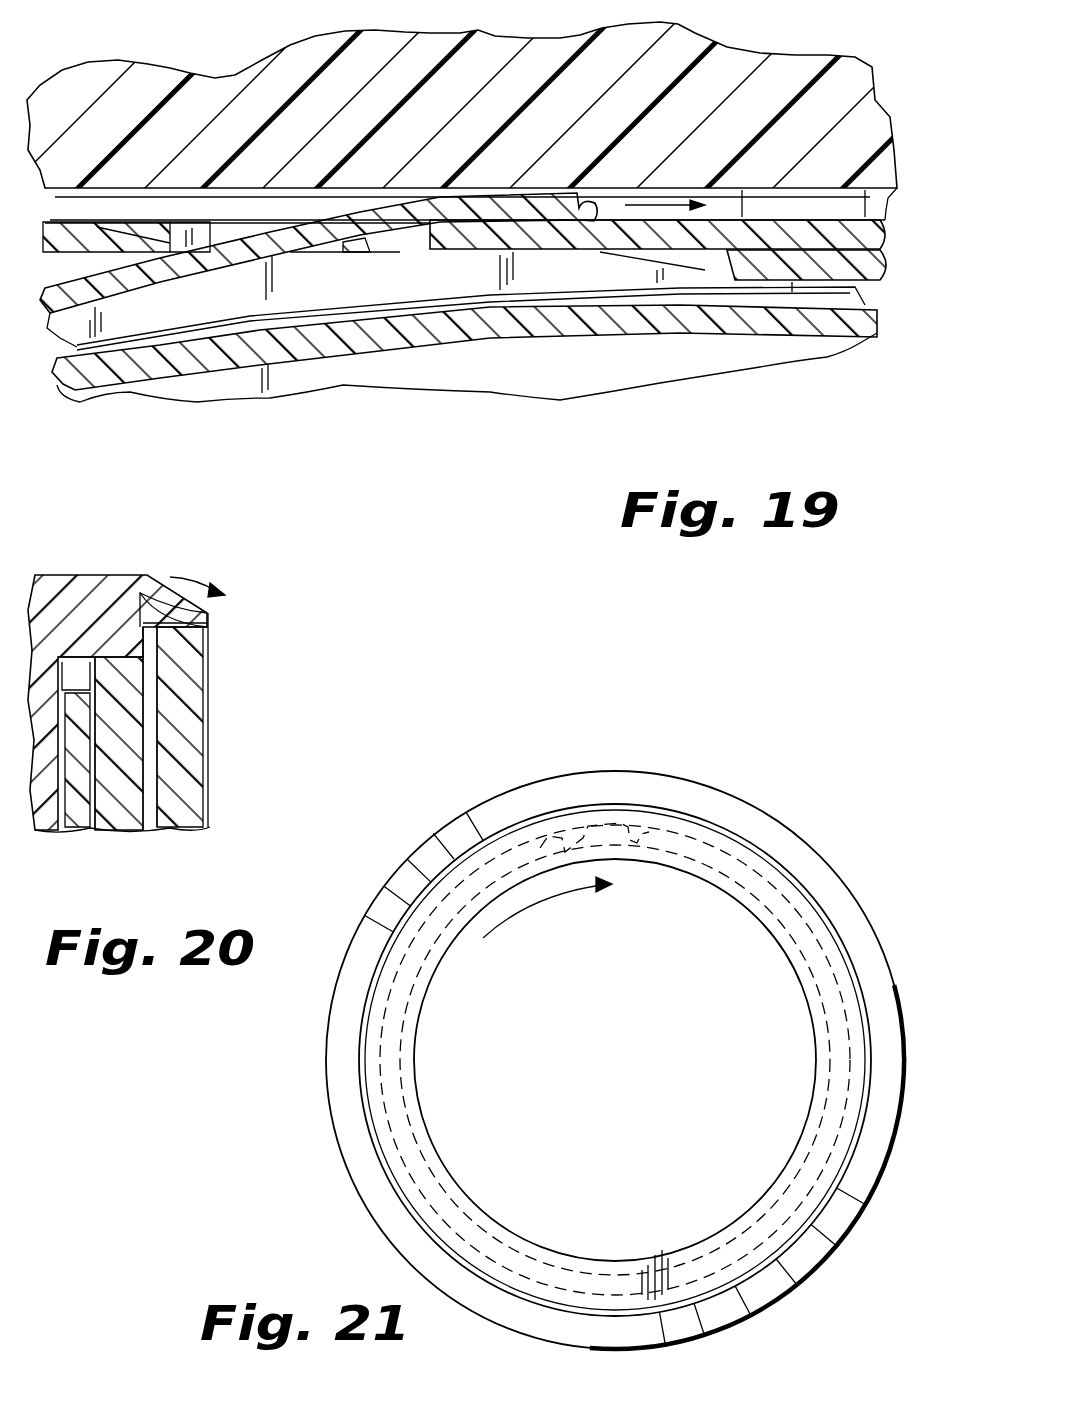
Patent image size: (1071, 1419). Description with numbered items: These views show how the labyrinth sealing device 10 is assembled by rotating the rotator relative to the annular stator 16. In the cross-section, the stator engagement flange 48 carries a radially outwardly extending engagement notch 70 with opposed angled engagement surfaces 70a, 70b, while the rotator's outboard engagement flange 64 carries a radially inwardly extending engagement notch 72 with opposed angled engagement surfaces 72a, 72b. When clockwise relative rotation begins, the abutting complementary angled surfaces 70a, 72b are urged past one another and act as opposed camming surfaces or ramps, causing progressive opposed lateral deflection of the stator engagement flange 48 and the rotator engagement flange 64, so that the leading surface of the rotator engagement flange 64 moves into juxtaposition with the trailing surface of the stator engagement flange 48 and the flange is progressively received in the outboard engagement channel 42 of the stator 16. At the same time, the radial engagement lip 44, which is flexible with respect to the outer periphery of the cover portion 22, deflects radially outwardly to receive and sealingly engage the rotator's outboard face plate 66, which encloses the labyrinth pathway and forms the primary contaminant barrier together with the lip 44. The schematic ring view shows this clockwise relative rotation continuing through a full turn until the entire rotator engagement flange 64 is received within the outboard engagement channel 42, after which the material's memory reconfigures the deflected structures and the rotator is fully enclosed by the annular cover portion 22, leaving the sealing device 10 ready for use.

In FIG. 21, the sealing device 10 is at (692, 766).
In FIG. 21, the annular stator 16 is at (752, 822).
In FIG. 19, the annular cover portion 22 is at (787, 133).
In FIG. 20, the annular cover portion 22 is at (110, 590).
In FIG. 20, the outboard engagement channel 42 is at (77, 665).
In FIG. 20, the radial engagement lip 44 is at (207, 617).
In FIG. 19, the annular engagement flange 48 is at (813, 230).
In FIG. 20, the annular engagement flange 48 is at (120, 757).
In FIG. 21, the annular engagement flange 48 is at (440, 935).
In FIG. 19, the outboard engagement flange 64 is at (397, 213).
In FIG. 20, the outboard engagement flange 64 is at (80, 827).
In FIG. 21, the outboard engagement flange 64 is at (420, 1040).
In FIG. 19, the outboard face plate 66 is at (107, 362).
In FIG. 20, the outboard face plate 66 is at (187, 707).
In FIG. 19, the engagement notch 70 is at (212, 240).
In FIG. 21, the engagement notch 70 is at (633, 848).
In FIG. 19, the angled engagement surface 70a is at (363, 237).
In FIG. 19, the angled engagement surface 70b is at (147, 235).
In FIG. 19, the engagement notch 72 is at (673, 253).
In FIG. 21, the engagement notch 72 is at (570, 832).
In FIG. 19, the angled engagement surface 72a is at (720, 253).
In FIG. 19, the angled engagement surface 72b is at (577, 237).